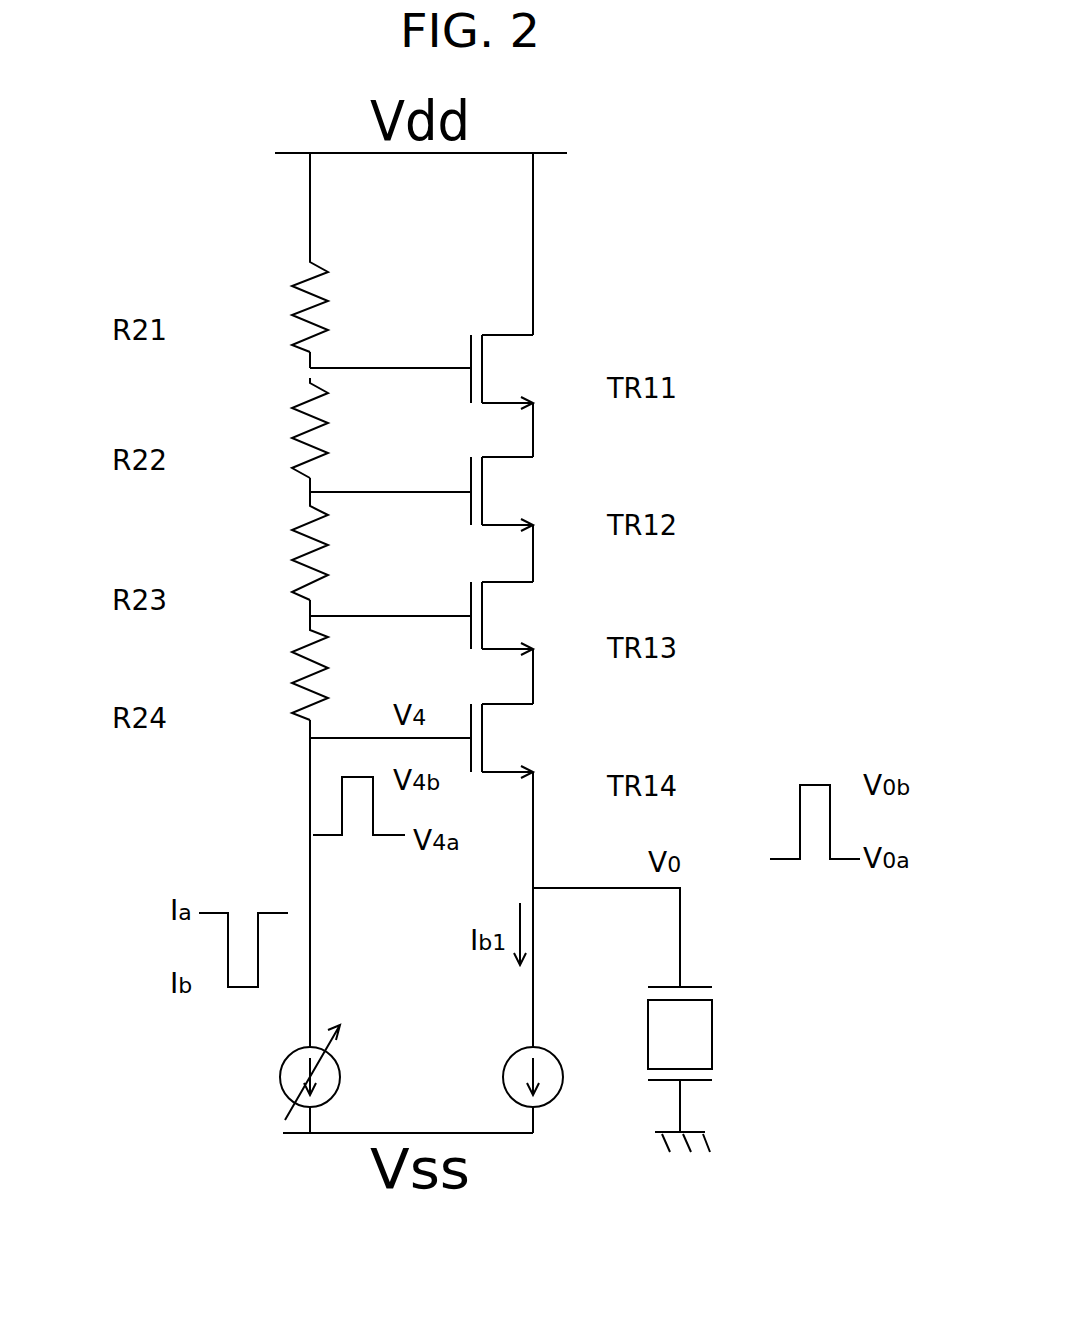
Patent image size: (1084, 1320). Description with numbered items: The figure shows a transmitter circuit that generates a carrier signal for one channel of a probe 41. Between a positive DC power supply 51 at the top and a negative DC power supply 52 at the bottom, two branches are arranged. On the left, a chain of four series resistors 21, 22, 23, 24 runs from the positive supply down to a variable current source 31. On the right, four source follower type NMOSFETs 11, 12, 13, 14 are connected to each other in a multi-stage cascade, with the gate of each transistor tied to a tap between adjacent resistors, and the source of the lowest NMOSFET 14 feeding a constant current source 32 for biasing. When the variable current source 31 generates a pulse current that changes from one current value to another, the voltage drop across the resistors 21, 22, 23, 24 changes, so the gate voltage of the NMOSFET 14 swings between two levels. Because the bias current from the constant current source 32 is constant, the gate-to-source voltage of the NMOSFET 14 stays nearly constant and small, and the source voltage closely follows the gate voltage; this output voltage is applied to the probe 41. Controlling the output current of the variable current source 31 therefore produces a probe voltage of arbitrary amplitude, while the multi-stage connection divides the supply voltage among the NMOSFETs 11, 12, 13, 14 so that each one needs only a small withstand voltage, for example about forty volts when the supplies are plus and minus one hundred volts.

The source follower type NMOSFET 11 is at (521, 406).
The source follower type NMOSFET 12 is at (521, 530).
The source follower type NMOSFET 13 is at (521, 653).
The source follower type NMOSFET 14 is at (521, 778).
The resistor 21 is at (295, 316).
The resistor 22 is at (292, 438).
The resistor 23 is at (293, 562).
The resistor 24 is at (292, 683).
The variable current source 31 is at (280, 1079).
The constant current source 32 is at (503, 1078).
The probe 41 is at (712, 1035).
The DC power supply 51 is at (510, 153).
The DC power supply 52 is at (503, 1133).